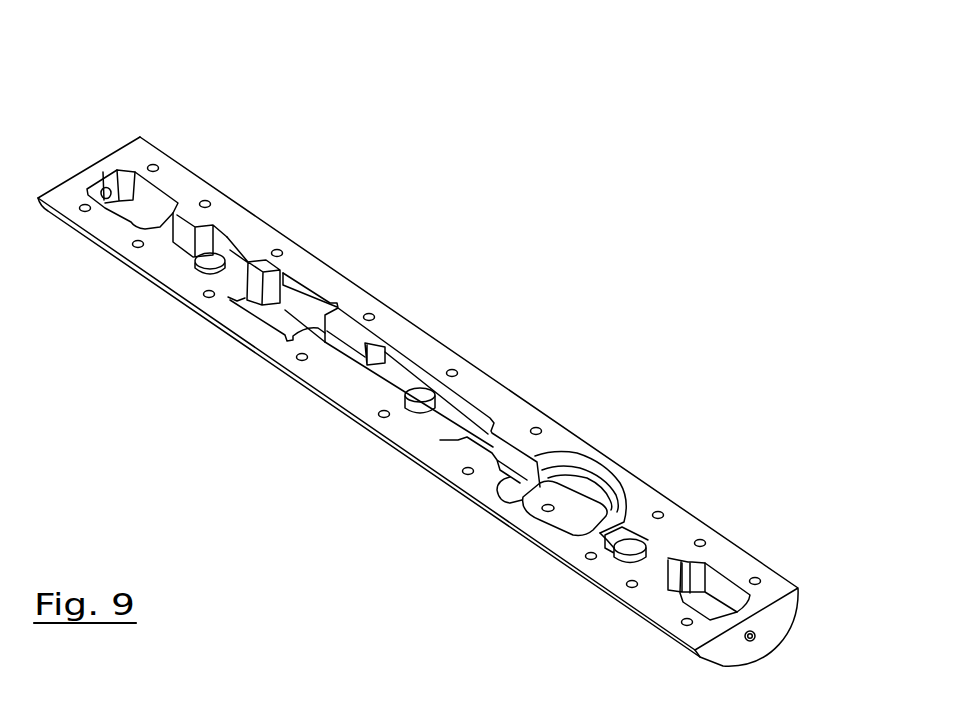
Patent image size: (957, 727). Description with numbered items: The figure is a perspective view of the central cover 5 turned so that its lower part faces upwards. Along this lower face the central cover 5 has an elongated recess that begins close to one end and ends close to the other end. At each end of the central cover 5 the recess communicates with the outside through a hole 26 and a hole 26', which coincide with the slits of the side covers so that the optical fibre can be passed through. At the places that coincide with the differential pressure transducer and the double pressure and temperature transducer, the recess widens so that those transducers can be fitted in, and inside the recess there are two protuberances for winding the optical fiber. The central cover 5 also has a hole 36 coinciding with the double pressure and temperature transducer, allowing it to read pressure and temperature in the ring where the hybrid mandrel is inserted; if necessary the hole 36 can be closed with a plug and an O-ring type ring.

The central cover 5 is at (505, 399).
The hole 26 is at (840, 612).
The hole 26' is at (86, 123).
The hole 36 is at (548, 511).